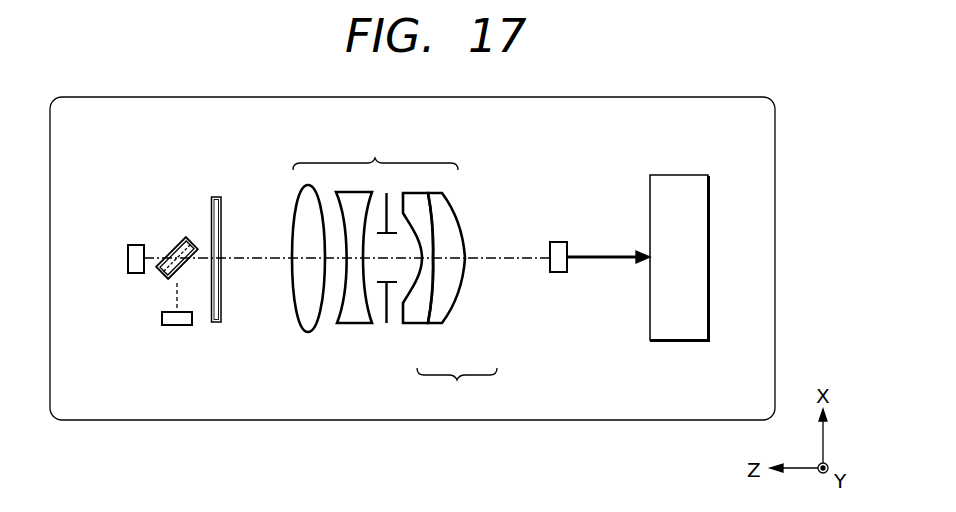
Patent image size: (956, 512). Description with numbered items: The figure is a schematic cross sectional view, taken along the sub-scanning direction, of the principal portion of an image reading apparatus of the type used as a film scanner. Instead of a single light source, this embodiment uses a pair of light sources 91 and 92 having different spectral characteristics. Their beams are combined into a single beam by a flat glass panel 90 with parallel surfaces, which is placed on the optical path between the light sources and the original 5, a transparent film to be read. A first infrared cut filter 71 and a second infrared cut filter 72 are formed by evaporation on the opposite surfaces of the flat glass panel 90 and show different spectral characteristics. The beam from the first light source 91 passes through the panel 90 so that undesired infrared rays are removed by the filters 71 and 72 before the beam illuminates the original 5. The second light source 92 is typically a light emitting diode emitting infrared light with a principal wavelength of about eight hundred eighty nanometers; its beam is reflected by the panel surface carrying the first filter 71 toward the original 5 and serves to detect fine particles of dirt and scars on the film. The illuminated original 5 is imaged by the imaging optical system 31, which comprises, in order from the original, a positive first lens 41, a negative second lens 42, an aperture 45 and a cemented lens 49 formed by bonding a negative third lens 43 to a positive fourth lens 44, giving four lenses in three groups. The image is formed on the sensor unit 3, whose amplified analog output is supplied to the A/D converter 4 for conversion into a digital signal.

The sensor unit 3 is at (563, 246).
The A/D converter 4 is at (677, 183).
The original 5 is at (215, 196).
The imaging optical system 31 is at (375, 159).
The first lens 41 is at (307, 318).
The second lens 42 is at (352, 324).
The third lens 43 is at (418, 318).
The fourth lens 44 is at (447, 313).
The aperture 45 is at (388, 324).
The cemented lens 49 is at (457, 387).
The first infrared cut filter 71 is at (198, 249).
The second infrared cut filter 72 is at (183, 242).
The flat glass panel 90 is at (158, 277).
The first light source 91 is at (133, 245).
The second light source 92 is at (188, 326).